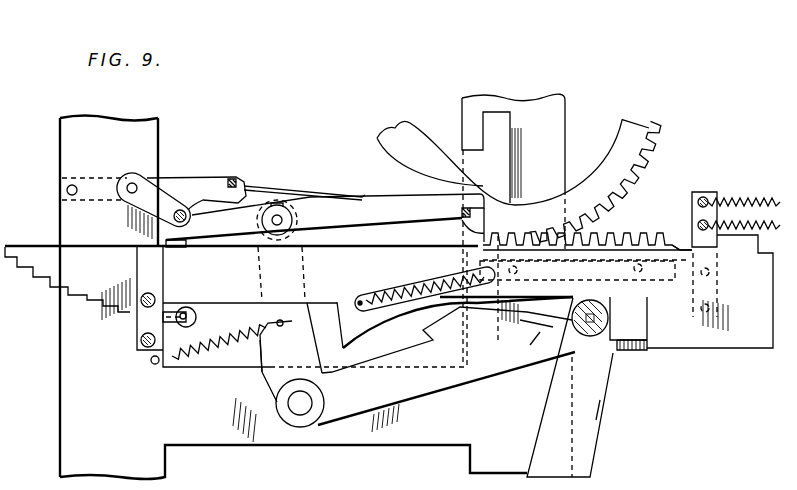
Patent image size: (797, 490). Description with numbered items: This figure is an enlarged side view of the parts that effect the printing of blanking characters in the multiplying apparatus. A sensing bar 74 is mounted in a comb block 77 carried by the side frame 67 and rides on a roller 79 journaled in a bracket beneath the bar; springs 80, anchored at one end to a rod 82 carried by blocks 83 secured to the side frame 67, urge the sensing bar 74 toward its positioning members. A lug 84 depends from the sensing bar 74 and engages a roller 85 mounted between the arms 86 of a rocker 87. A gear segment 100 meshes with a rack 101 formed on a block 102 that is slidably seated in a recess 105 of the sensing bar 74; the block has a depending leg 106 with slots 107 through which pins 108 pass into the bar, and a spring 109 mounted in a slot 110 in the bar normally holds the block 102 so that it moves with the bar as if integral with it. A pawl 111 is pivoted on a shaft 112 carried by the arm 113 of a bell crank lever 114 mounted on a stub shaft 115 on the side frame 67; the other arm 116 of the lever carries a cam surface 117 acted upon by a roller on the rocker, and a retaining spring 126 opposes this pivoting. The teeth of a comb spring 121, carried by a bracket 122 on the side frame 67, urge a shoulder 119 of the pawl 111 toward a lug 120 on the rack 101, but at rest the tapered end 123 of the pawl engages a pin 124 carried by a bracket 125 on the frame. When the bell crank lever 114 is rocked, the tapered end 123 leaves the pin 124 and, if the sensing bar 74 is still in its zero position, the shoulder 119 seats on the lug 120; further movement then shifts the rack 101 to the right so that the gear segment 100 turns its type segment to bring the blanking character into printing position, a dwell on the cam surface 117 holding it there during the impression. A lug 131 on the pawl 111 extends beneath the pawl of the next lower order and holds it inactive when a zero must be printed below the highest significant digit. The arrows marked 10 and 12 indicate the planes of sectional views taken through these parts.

The section line 10- 10 is at (490, 227).
The section line 12- 12 is at (183, 188).
The side frame 67 is at (531, 106).
The sensing bar 74 is at (350, 271).
The comb block 77 is at (147, 323).
The roller 79 is at (196, 316).
The spring 80 is at (750, 222).
The rod 82 is at (706, 220).
The block 83 is at (692, 205).
The lug 84 is at (623, 352).
The roller 85 is at (606, 316).
The arm 86 is at (594, 405).
The rocker 87 is at (600, 458).
The gear segment 100 is at (631, 128).
The rack 101 is at (632, 230).
The block 102 is at (578, 244).
The recess 105 is at (688, 250).
The depending leg 106 is at (660, 287).
The slot 107 is at (528, 332).
The pin 108 is at (518, 270).
The spring 109 is at (390, 296).
The slot 110 is at (427, 285).
The pawl 111 is at (377, 206).
The shaft 112 is at (280, 217).
The arm 113 is at (300, 286).
The bell crank lever 114 is at (268, 377).
The stub shaft 115 is at (302, 413).
The arm 116 is at (447, 367).
The cam surface 117 is at (532, 345).
The shoulder 119 is at (462, 212).
The lug 120 is at (482, 231).
The comb spring 121 is at (325, 194).
The bracket 122 is at (207, 176).
The tapered end 123 is at (158, 228).
The pin 124 is at (236, 186).
The bracket 125 is at (148, 172).
The retaining spring 126 is at (212, 345).
The lug 131 is at (168, 248).